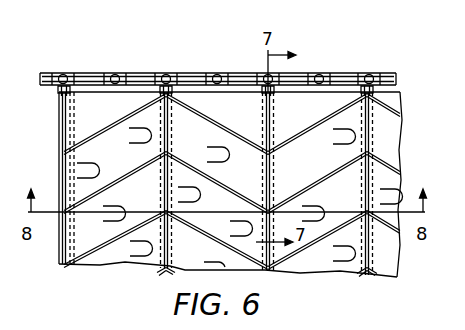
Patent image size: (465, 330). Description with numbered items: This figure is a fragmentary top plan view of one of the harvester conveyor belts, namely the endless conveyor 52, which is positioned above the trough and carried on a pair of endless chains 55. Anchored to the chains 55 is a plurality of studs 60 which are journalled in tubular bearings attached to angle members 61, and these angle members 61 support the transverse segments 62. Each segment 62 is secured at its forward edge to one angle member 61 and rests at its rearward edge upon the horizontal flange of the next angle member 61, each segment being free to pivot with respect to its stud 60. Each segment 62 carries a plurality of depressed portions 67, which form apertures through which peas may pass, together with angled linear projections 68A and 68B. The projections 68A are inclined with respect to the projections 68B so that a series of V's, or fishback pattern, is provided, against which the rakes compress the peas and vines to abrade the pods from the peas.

The endless conveyor 52 is at (403, 102).
The endless chains 55 is at (372, 73).
The studs 60 is at (58, 89).
The angle members 61 is at (60, 143).
The segments 62 is at (112, 102).
The depressed portions 67 is at (128, 142).
The angled linear projections 68A is at (107, 248).
The angled linear projections 68B is at (193, 245).